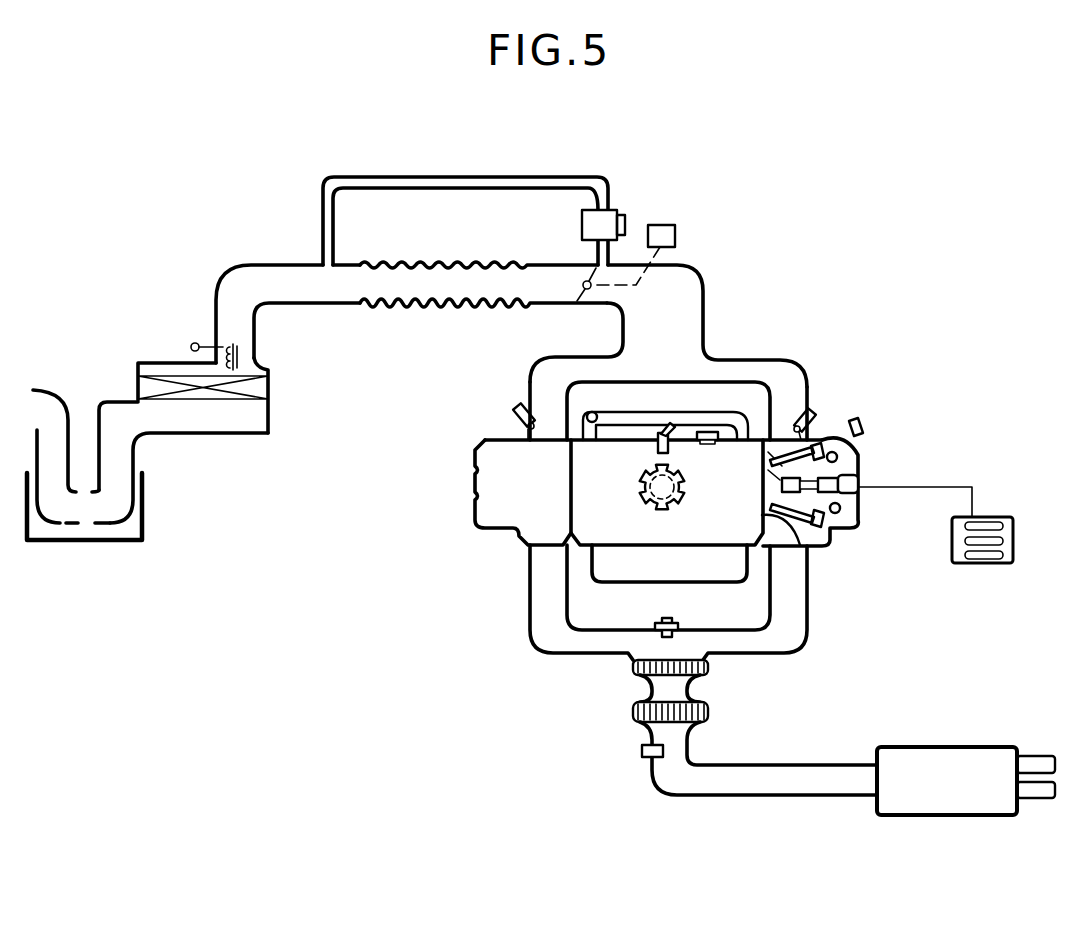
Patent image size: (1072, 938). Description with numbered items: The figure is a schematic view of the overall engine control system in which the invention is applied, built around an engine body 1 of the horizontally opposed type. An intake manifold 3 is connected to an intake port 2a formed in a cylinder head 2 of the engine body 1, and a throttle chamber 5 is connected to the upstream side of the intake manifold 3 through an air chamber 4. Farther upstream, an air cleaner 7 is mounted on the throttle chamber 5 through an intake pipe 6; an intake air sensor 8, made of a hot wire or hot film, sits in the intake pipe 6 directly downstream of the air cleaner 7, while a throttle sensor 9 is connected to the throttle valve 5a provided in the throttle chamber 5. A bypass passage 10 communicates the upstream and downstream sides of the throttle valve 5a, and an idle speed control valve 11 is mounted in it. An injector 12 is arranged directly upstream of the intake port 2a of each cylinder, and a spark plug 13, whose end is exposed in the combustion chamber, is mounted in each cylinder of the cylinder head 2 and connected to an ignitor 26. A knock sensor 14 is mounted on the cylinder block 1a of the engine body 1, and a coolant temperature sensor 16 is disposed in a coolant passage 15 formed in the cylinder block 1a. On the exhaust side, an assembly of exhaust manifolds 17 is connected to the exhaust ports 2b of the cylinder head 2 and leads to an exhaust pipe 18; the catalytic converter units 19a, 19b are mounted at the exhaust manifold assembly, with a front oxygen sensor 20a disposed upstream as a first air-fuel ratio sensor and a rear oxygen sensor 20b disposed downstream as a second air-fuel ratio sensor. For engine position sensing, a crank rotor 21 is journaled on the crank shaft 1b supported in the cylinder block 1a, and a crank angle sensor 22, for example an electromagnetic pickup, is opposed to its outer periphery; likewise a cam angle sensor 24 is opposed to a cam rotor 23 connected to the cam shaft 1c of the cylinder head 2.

The engine body 1 is at (494, 538).
The cylinder block 1a is at (627, 547).
The crank shaft 1b is at (645, 508).
The cam shaft 1c is at (862, 443).
The cylinder head 2 is at (472, 513).
The intake port 2a is at (763, 443).
The exhaust port 2b is at (808, 546).
The intake manifold 3 is at (725, 358).
The air chamber 4 is at (704, 294).
The throttle chamber 5 is at (559, 304).
The throttle valve 5a is at (585, 281).
The intake pipe 6 is at (362, 305).
The air cleaner 7 is at (270, 373).
The intake air sensor 8 is at (238, 349).
The throttle sensor 9 is at (676, 233).
The bypass passage 10 is at (443, 189).
The idle speed control valve 11 is at (613, 211).
The injector 12 is at (510, 422).
The spark plug 13 is at (863, 480).
The knock sensor 14 is at (703, 444).
The coolant passage 15 is at (669, 407).
The coolant temperature sensor 16 is at (597, 412).
The exhaust manifolds 17 is at (806, 622).
The exhaust pipe 18 is at (732, 797).
The upstream flange 19a is at (709, 670).
The downstream flange 19b is at (709, 712).
The front O2 sensor 20a is at (676, 620).
The rear O2 sensor 20b is at (642, 752).
The crank rotor 21 is at (643, 487).
The crank angle sensor 22 is at (657, 447).
The cam rotor 23 is at (863, 460).
The cam angle sensor 24 is at (861, 428).
The ignitor 26 is at (1010, 563).